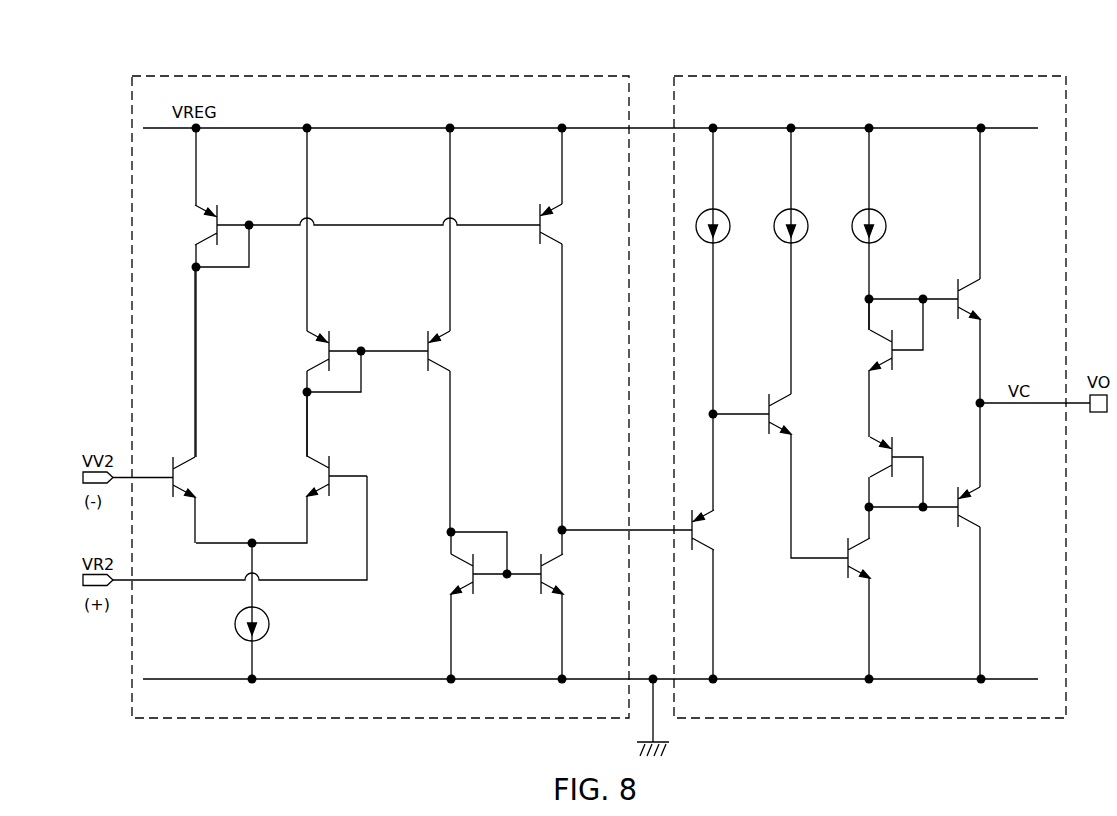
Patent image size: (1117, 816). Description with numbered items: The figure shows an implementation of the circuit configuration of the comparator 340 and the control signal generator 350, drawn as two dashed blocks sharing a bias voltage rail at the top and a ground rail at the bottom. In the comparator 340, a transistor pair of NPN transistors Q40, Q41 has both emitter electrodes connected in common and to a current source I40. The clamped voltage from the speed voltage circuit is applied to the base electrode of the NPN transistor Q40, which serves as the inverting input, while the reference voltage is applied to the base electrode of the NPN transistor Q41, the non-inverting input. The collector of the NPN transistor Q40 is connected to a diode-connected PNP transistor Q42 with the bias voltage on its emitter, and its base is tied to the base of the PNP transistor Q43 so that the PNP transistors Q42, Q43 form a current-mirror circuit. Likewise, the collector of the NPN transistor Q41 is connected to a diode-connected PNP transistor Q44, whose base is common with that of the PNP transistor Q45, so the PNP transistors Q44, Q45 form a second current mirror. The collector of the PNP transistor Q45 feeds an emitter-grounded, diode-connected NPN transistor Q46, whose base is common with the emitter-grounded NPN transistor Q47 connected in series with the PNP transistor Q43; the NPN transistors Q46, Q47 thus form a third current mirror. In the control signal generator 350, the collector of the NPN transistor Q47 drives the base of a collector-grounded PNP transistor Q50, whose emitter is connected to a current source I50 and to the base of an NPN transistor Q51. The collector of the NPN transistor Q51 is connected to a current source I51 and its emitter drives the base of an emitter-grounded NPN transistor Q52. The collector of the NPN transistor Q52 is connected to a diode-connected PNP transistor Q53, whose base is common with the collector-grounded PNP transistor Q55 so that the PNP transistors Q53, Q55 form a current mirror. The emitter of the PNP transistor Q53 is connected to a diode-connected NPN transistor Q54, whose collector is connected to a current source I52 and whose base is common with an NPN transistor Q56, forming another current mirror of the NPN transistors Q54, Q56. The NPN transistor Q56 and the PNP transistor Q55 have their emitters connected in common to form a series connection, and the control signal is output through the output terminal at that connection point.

The comparator 340 is at (473, 76).
The control signal generator 350 is at (980, 76).
The NPN transistor Q40 is at (215, 407).
The NPN transistor Q41 is at (281, 467).
The PNP transistor Q42 is at (351, 292).
The PNP transistor Q43 is at (570, 329).
The PNP transistor Q44 is at (350, 292).
The PNP transistor Q45 is at (457, 330).
The NPN transistor Q46 is at (479, 604).
The NPN transistor Q47 is at (616, 603).
The current source I40 is at (267, 611).
The PNP transistor Q50 is at (718, 545).
The NPN transistor Q51 is at (780, 476).
The NPN transistor Q52 is at (875, 593).
The PNP transistor Q53 is at (898, 474).
The NPN transistor Q54 is at (898, 366).
The PNP transistor Q55 is at (987, 583).
The NPN transistor Q56 is at (987, 307).
The current source I50 is at (728, 319).
The current source I51 is at (807, 261).
The current source I52 is at (885, 229).